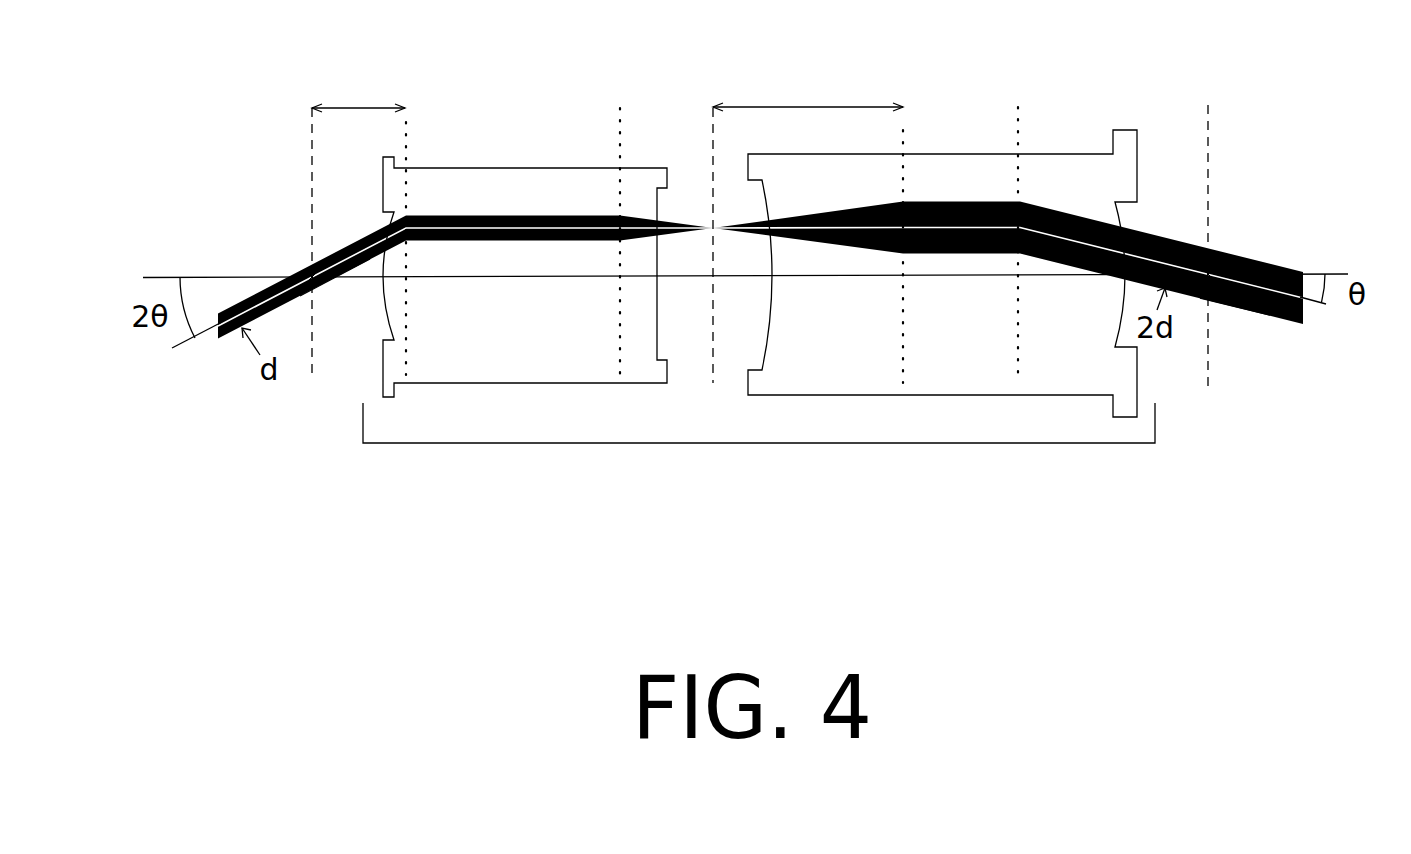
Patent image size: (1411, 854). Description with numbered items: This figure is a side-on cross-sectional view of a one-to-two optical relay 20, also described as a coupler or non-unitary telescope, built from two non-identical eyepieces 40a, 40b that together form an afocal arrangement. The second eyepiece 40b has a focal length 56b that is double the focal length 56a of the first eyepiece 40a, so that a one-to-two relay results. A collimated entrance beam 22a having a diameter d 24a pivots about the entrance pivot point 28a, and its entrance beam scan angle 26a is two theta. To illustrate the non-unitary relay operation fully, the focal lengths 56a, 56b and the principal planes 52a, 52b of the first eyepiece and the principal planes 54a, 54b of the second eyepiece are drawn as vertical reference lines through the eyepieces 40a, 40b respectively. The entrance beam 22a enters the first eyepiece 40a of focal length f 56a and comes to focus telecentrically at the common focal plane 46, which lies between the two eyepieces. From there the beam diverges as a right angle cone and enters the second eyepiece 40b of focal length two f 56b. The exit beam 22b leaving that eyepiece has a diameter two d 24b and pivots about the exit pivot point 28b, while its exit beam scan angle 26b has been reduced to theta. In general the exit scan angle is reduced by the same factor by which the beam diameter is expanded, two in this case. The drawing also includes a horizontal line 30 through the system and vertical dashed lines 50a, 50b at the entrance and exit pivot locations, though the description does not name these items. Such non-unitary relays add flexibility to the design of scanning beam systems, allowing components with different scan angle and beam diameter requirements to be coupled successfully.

The optical relay 20 is at (713, 443).
The entrance beam 22a is at (363, 265).
The exit beam 22b is at (1230, 303).
The diameter d 24a is at (233, 302).
The diameter 2d 24b is at (1188, 242).
The entrance beam scan angle 26a is at (172, 348).
The exit beam scan angle 26b is at (1326, 304).
The entrance pivot point 28a is at (310, 275).
The exit pivot point 28b is at (1208, 275).
The optical axis 30 is at (143, 278).
The first eyepiece 40a is at (648, 168).
The second eyepiece 40b is at (1078, 154).
The common focal plane 46 is at (712, 108).
The input pivot plane 50a is at (312, 380).
The output pivot plane 50b is at (1208, 393).
The principal plane 52a is at (405, 143).
The principal plane 52b is at (620, 108).
The principal plane 54a is at (903, 130).
The principal plane 54b is at (1018, 107).
The focal length f 56a is at (378, 107).
The focal length 2f 56b is at (838, 107).